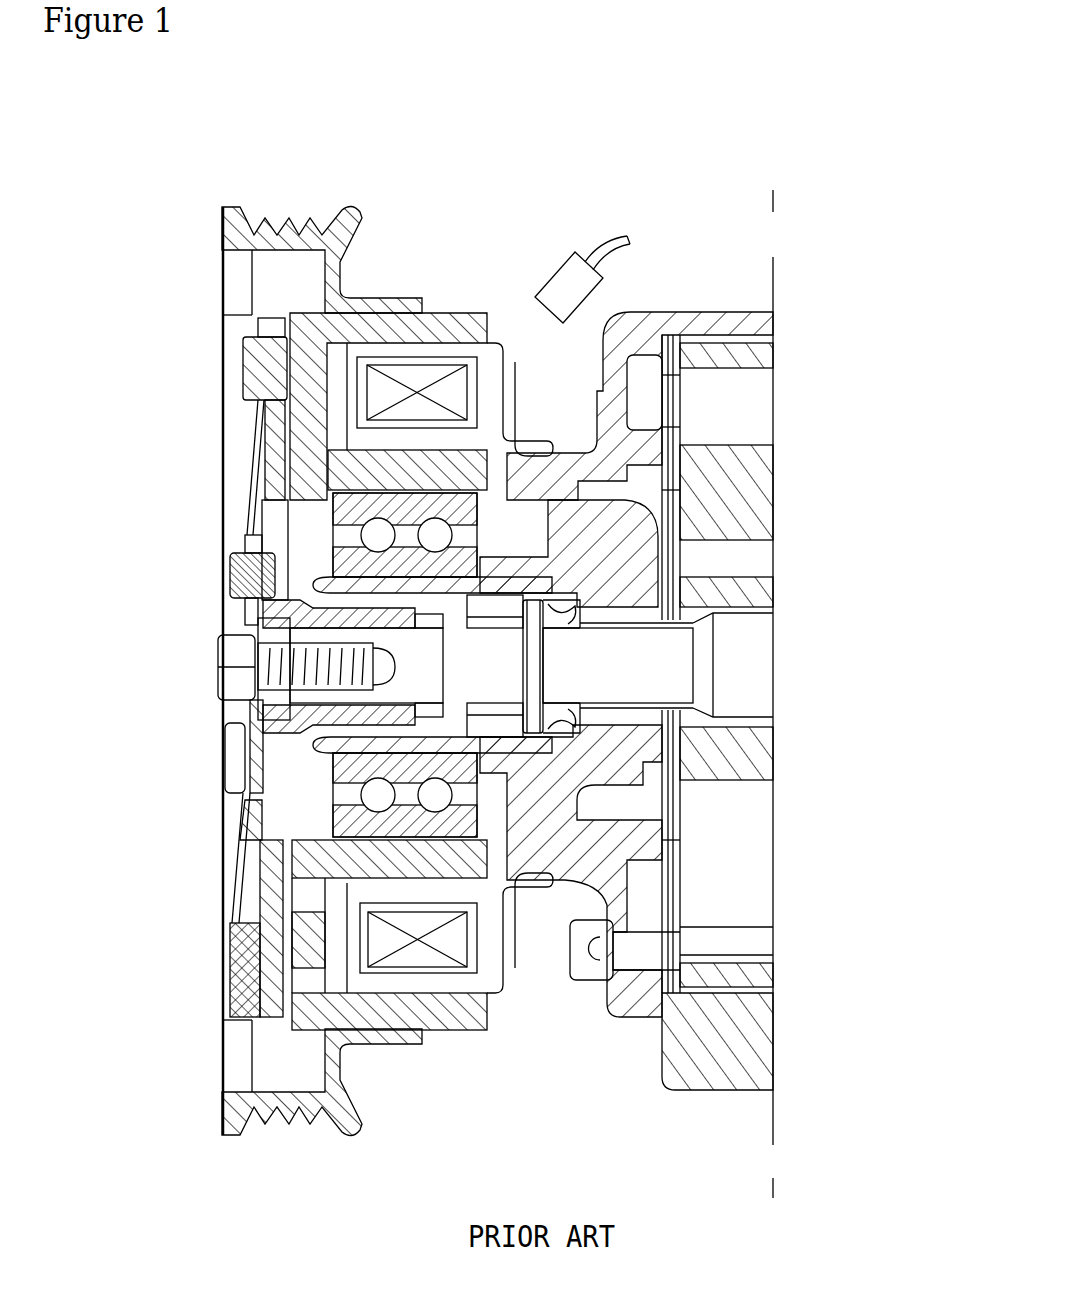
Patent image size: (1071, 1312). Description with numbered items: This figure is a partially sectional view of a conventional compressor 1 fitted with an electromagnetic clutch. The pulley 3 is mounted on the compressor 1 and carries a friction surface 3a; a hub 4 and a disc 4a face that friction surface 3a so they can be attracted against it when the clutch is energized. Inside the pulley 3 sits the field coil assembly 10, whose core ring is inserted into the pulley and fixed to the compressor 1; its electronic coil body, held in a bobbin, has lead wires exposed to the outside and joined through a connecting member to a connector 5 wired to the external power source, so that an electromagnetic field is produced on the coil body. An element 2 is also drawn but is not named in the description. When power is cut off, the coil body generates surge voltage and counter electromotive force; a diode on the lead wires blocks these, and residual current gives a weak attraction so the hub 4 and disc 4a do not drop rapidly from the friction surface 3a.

The compressor 1 is at (684, 292).
The drive shaft 2 is at (757, 665).
The pulley 3 is at (300, 215).
The friction surface 3a is at (300, 375).
The hub 4 is at (235, 760).
The disc 4a is at (268, 452).
The connector 5 is at (595, 235).
The field coil assembly 10 is at (530, 1015).